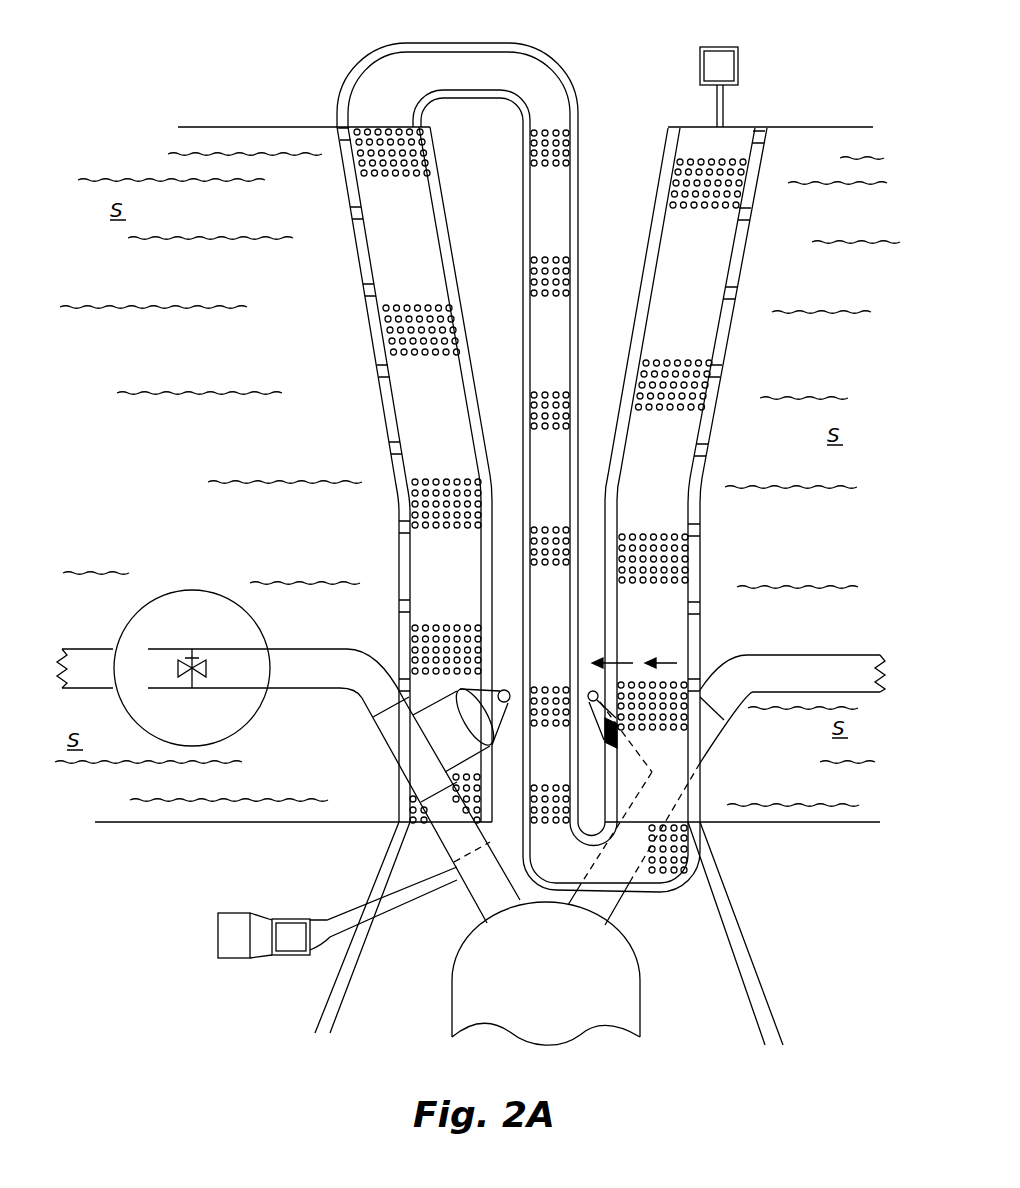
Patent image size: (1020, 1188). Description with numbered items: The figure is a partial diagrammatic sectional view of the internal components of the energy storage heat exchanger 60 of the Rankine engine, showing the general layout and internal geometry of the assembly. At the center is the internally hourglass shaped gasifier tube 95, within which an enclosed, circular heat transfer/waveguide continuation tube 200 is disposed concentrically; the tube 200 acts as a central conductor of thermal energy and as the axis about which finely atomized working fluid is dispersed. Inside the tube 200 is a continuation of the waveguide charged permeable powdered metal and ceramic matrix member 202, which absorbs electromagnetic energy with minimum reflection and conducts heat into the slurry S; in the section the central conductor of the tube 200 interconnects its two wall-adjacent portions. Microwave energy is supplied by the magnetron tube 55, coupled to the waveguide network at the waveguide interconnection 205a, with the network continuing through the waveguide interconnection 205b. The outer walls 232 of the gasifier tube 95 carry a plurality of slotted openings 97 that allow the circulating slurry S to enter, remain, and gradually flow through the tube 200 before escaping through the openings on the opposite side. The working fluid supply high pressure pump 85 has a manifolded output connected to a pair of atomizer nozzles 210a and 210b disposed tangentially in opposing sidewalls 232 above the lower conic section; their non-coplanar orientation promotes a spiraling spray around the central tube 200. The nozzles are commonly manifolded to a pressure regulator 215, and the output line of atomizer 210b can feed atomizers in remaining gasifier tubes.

The energy storage heat exchanger 60 is at (257, 72).
The gasifier tube 95 is at (342, 448).
The heat transfer/waveguide continuation tube 200 is at (573, 90).
The permeable powdered metal and ceramic matrix member 202 is at (715, 262).
The slotted openings 97 is at (347, 217).
The outer walls 232 is at (395, 562).
The pressure regulator 215 is at (160, 577).
The atomizer nozzle 210a is at (390, 737).
The atomizer nozzle 210b is at (707, 740).
The magnetron tube 55 is at (220, 937).
The waveguide interconnection 205a is at (290, 960).
The waveguide interconnection 205b is at (740, 62).
The working fluid supply high pressure pump 85 is at (560, 990).